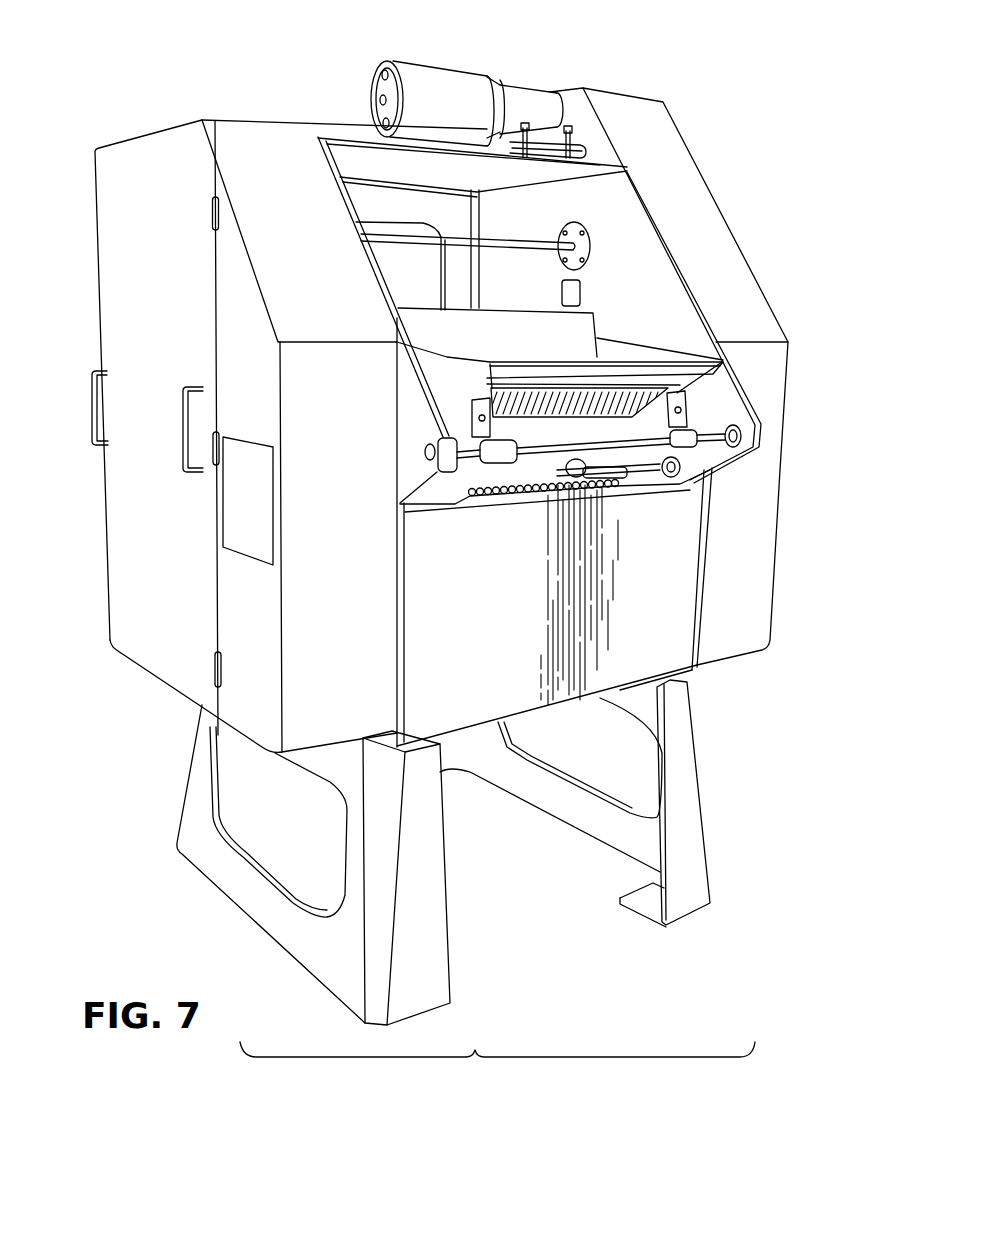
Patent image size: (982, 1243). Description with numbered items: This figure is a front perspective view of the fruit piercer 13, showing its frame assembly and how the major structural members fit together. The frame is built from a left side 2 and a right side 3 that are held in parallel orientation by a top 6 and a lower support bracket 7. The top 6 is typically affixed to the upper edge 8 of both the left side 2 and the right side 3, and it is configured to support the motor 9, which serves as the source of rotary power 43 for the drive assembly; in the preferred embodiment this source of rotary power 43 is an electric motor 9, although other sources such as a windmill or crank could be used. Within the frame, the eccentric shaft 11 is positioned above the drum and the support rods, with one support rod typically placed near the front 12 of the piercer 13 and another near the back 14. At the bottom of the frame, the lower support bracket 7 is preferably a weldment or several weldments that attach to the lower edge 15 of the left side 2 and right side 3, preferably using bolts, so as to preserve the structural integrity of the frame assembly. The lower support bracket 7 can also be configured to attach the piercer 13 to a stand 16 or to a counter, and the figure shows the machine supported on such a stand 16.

The left side 2 is at (412, 455).
The right side 3 is at (712, 335).
The top 6 is at (390, 162).
The lower support bracket 7 is at (393, 738).
The upper edge 8 is at (628, 171).
The motor 9 is at (443, 90).
The eccentric shaft 11 is at (527, 240).
The front 12 is at (640, 603).
The fruit piercer 13 is at (497, 1064).
The back 14 is at (97, 272).
The lower edge 15 is at (440, 772).
The stand 16 is at (685, 790).
The source of rotary power 43 is at (533, 84).